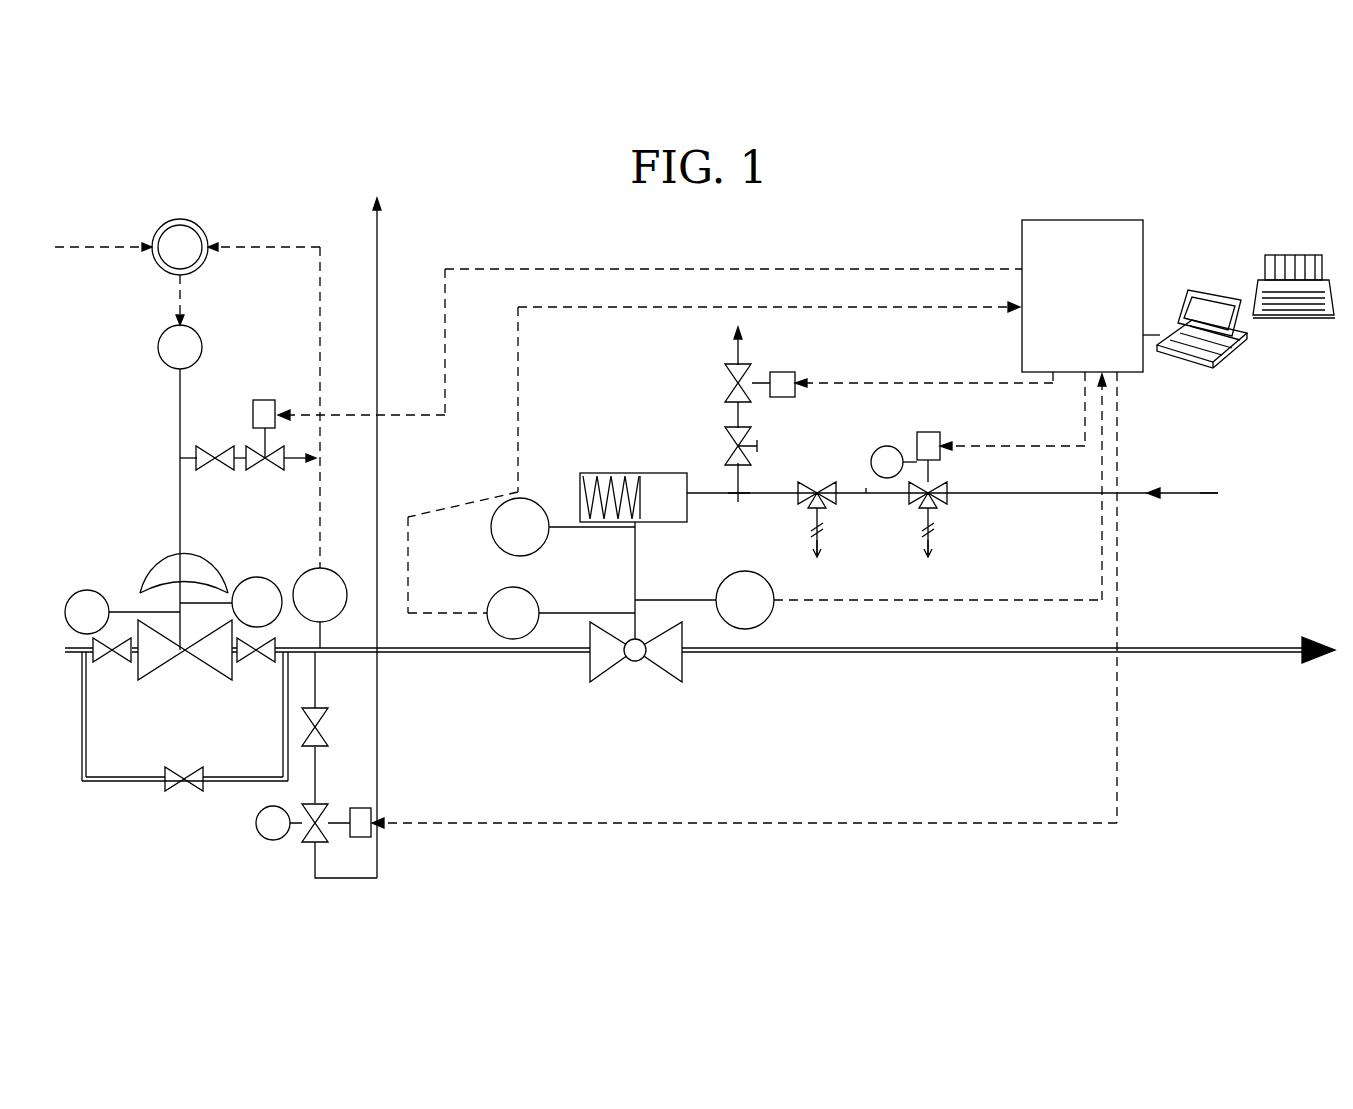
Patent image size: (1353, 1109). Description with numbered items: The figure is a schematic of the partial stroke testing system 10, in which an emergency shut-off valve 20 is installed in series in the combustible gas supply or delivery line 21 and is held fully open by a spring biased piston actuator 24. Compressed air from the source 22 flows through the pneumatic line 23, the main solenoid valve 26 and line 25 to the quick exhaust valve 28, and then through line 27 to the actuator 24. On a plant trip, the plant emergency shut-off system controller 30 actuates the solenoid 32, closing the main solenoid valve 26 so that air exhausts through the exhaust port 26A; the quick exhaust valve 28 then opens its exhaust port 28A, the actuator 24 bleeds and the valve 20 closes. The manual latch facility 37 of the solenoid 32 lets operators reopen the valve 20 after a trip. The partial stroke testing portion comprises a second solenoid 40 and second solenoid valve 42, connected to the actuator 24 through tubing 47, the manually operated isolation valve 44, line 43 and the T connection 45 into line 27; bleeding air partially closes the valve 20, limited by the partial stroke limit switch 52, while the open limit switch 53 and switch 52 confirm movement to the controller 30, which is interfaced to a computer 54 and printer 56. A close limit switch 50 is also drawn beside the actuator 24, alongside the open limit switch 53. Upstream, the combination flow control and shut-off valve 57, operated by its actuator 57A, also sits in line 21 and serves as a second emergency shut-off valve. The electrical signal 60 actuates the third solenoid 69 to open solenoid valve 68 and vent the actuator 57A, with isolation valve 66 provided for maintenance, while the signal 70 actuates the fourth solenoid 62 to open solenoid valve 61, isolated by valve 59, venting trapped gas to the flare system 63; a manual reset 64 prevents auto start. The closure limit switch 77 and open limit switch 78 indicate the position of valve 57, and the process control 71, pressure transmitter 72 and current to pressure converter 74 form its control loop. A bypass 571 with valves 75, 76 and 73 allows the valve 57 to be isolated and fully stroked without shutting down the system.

The partial stroke testing system 10 is at (510, 296).
The emergency shut-off valve 20 is at (590, 665).
The supply or delivery line 21 is at (415, 655).
The source of compressed air or gas 22 is at (1218, 492).
The pneumatic line or tubing 23 is at (1120, 492).
The spring biased piston actuator 24 is at (580, 493).
The line 25 is at (866, 490).
The main solenoid valve 26 is at (948, 486).
The exhaust port 26A is at (952, 557).
The line 27 is at (772, 499).
The quick exhaust valve 28 is at (838, 500).
The exhaust port 28A is at (843, 545).
The plant emergency shut-off system controller 30 is at (1022, 248).
The solenoid 32 is at (942, 440).
The manual latch facility 37 is at (895, 447).
The second solenoid 40 is at (797, 375).
The second solenoid valve 42 is at (728, 378).
The tubing or line 43 is at (745, 482).
The isolation valve 44 is at (752, 446).
The T connection 45 is at (738, 502).
The pneumatic line or tubing 47 is at (738, 412).
The close limit switch 50 is at (492, 538).
The partial stroke limit switch 52 is at (768, 628).
The open limit switch 53 is at (488, 625).
The computer 54 is at (1200, 298).
The printer 56 is at (1298, 255).
The combination flow control and shut-off valve 57 is at (203, 680).
The valve actuator 57A is at (148, 587).
The isolation valve 59 is at (328, 728).
The electrical signal 60 is at (568, 266).
The solenoid valve 61 is at (305, 845).
The fourth solenoid 62 is at (362, 840).
The flare system 63 is at (372, 247).
The manual reset 64 is at (256, 834).
The isolation valve 66 is at (203, 448).
The solenoid valve 68 is at (270, 470).
The third solenoid 69 is at (278, 405).
The electrical signal 70 is at (740, 826).
The process control 71 is at (172, 218).
The pressure transmitter 72 is at (332, 570).
The bypass valve 73 is at (193, 792).
The current to pressure converter 74 is at (163, 333).
The bypass valve 75 is at (105, 665).
The bypass valve 76 is at (262, 664).
The closure limit switch 77 is at (262, 577).
The open limit switch 78 is at (75, 592).
The bypass 571 is at (80, 745).